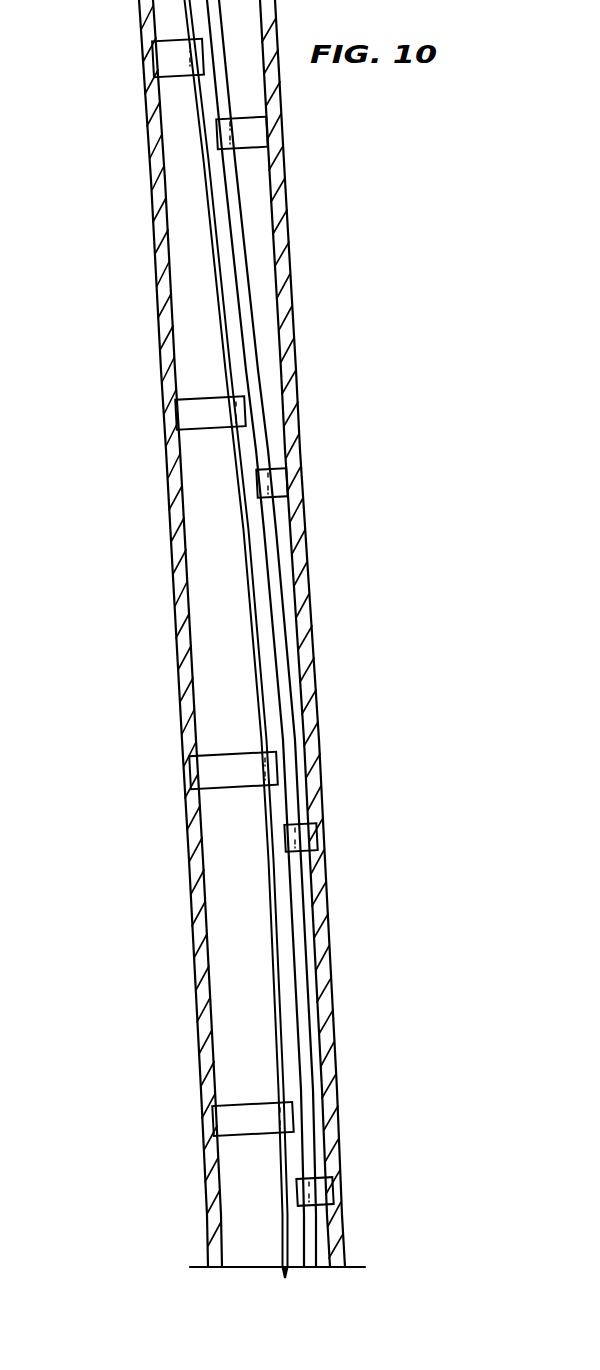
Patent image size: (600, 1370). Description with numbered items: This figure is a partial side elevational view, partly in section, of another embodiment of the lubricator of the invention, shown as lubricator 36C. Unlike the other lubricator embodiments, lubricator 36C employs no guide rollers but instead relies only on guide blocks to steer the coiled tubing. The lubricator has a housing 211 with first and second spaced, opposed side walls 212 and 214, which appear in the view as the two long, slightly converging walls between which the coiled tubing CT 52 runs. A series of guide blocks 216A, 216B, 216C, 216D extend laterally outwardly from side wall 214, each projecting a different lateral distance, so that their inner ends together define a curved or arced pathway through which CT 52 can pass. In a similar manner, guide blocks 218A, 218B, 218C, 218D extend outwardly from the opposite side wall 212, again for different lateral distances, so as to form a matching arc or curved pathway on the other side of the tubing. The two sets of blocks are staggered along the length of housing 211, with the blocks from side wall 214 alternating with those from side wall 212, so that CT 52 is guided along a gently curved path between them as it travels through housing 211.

The lubricator 36C is at (310, 254).
The CT 52 is at (298, 957).
The housing 211 is at (305, 607).
The second side wall 212 is at (290, 402).
The first side wall 214 is at (175, 572).
The guide block 216A is at (165, 62).
The guide block 216B is at (185, 421).
The guide block 216C is at (205, 770).
The guide block 216D is at (222, 1118).
The guide block 218A is at (258, 131).
The guide block 218B is at (290, 482).
The guide block 218C is at (305, 836).
The guide block 218D is at (318, 1192).